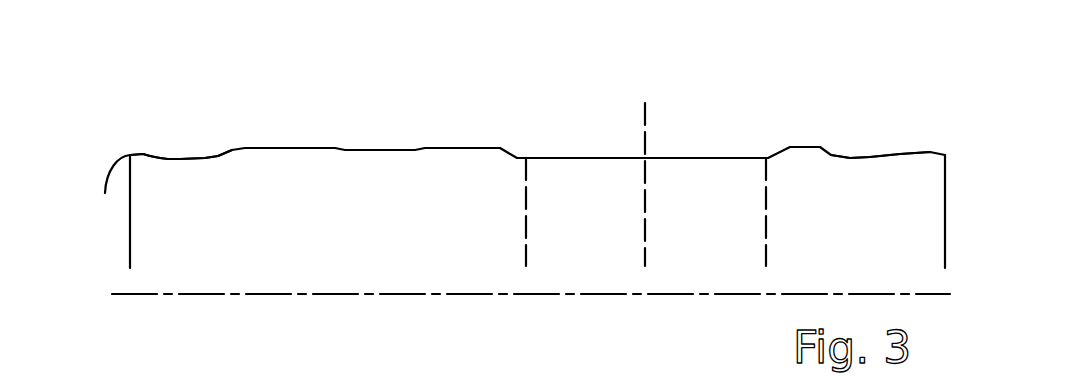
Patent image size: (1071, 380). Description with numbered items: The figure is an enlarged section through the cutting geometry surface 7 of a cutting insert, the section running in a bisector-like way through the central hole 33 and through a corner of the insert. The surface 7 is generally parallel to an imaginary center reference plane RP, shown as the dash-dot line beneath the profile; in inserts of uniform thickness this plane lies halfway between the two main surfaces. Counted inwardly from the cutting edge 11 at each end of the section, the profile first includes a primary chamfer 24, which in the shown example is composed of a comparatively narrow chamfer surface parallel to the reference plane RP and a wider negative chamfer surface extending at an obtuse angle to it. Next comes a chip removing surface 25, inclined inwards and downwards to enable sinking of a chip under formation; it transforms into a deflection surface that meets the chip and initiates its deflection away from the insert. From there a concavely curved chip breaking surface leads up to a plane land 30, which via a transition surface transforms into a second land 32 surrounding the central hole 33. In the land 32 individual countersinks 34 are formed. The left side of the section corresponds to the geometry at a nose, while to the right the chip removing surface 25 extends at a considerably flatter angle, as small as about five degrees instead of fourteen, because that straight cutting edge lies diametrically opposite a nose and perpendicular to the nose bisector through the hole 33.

The cutting geometry surface 7 is at (705, 135).
The cutting edge 11 is at (948, 97).
The primary chamfer 24 is at (142, 153).
The chip removing surface 25 is at (158, 157).
The plane land 30 is at (205, 158).
The second land 32 is at (297, 148).
The central hole 33 is at (527, 202).
The countersinks 34 is at (382, 150).
The center reference plane RP is at (531, 279).